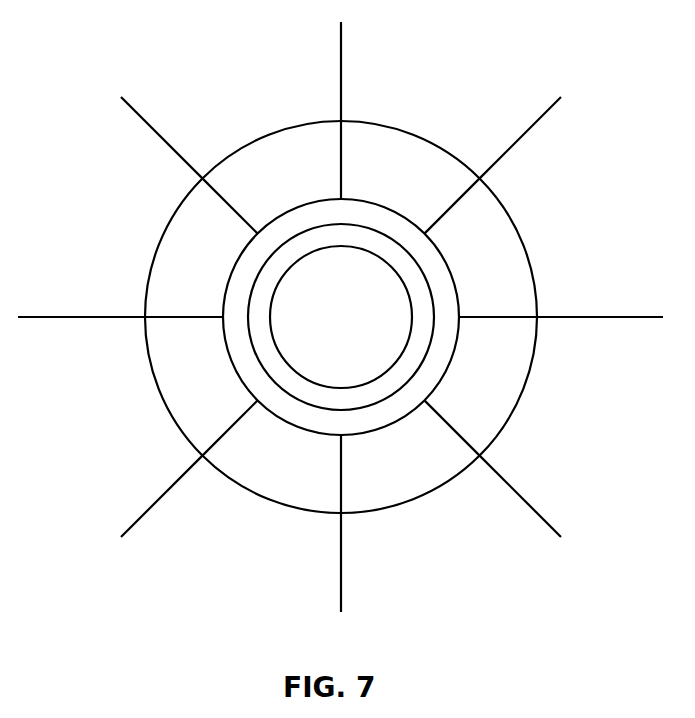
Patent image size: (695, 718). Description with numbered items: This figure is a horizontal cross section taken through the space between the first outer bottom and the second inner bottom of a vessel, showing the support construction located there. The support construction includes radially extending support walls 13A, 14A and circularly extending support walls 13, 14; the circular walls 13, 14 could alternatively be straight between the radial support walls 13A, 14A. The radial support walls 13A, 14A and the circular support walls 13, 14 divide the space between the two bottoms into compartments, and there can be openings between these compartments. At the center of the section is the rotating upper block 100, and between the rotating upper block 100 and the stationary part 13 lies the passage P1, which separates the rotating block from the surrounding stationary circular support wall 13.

The circularly extending support wall 13 is at (450, 267).
The radially extending support wall 13A is at (450, 202).
The circularly extending support wall 14 is at (526, 254).
The radially extending support wall 14A is at (527, 128).
The rotating upper block 100 is at (415, 344).
The passage P1 is at (375, 417).